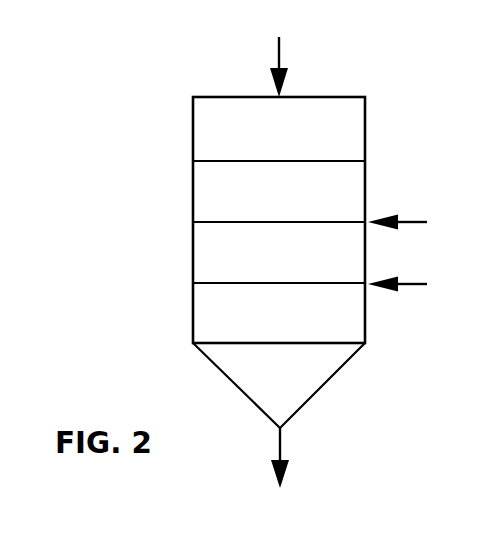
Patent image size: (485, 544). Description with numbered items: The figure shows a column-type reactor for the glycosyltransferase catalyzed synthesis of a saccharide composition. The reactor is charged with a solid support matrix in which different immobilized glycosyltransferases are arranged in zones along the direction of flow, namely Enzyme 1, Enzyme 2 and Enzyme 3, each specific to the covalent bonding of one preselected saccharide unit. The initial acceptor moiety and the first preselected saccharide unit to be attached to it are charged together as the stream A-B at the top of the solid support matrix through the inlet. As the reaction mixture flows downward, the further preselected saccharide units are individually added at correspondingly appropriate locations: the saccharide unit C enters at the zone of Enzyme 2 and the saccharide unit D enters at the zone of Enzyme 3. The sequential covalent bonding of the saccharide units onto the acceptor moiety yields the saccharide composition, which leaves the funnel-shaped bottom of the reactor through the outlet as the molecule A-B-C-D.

The initial acceptor moiety and first preselected saccharide unit A-B is at (176, 48).
The preselected saccharide unit C is at (414, 219).
The preselected saccharide unit D is at (415, 281).
The saccharide composition A-B-C-D is at (283, 476).
The glycosyltransferase Enzyme 1 is at (230, 197).
The glycosyltransferase Enzyme 2 is at (230, 247).
The glycosyltransferase Enzyme 3 is at (230, 308).